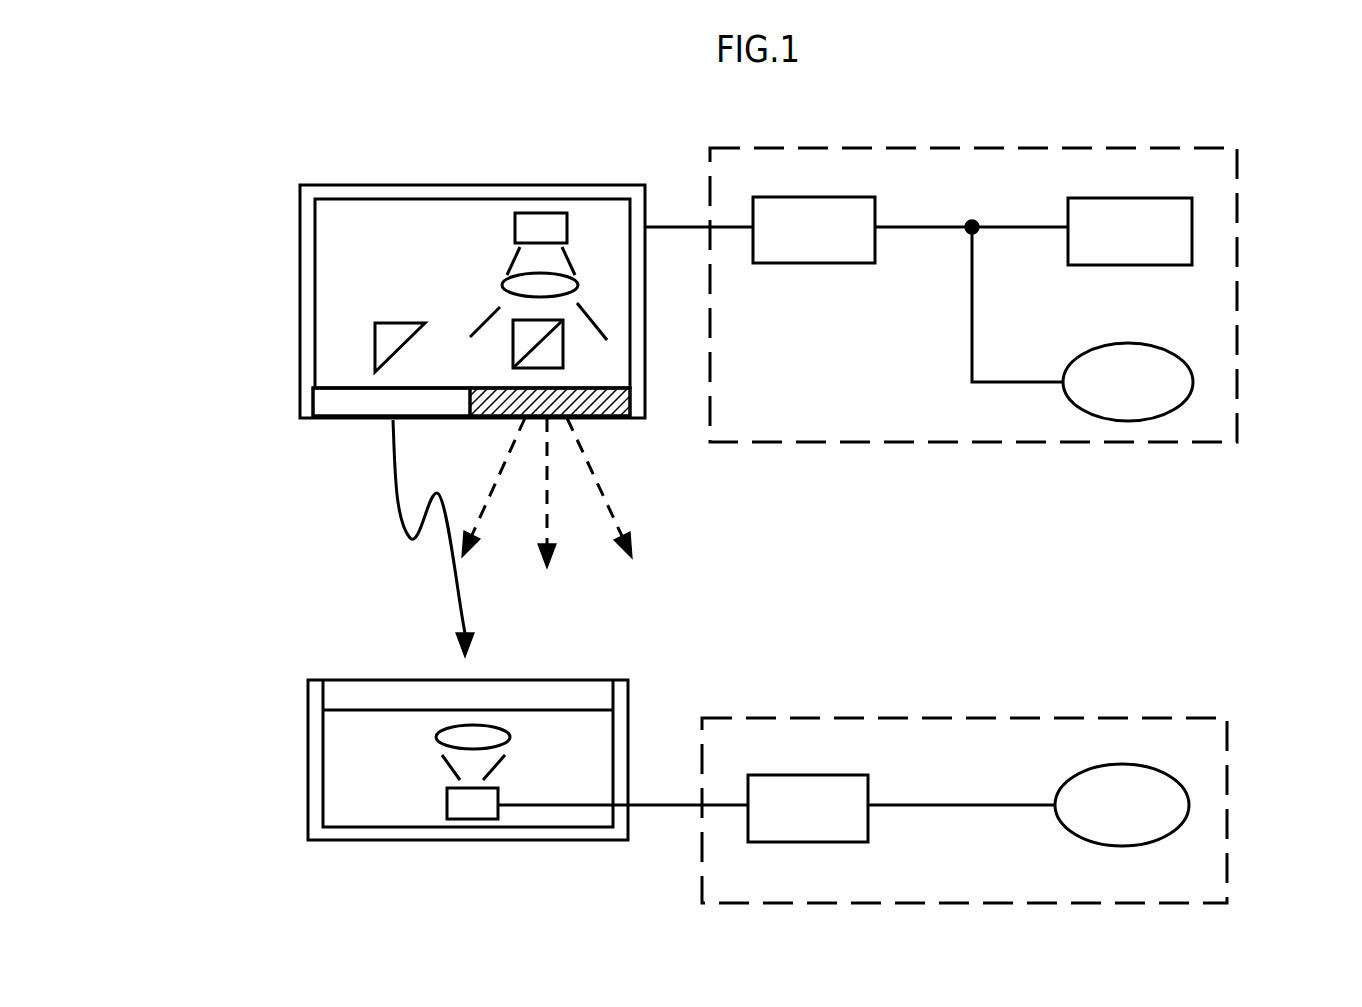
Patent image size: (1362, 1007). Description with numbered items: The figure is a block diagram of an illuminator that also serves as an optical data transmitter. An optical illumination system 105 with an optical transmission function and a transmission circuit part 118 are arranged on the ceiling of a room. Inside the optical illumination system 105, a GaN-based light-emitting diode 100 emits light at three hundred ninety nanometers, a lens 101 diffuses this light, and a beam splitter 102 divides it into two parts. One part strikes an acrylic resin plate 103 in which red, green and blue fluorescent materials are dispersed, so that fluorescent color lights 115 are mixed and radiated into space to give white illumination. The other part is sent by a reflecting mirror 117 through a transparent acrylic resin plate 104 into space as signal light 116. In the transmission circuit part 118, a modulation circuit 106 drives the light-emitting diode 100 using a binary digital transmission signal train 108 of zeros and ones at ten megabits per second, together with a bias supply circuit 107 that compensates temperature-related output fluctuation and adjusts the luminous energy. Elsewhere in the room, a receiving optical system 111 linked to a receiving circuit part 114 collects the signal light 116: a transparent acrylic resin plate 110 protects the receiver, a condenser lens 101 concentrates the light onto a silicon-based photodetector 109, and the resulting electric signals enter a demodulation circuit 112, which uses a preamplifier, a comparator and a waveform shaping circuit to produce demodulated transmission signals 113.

The GaN-based light-emitting diode 100 is at (384, 244).
The lens 101 is at (385, 511).
The beam splitter 102 is at (400, 348).
The acrylic resin plate 103 is at (421, 433).
The transparent acrylic resin plate 104 is at (331, 412).
The optical illumination system 105 is at (275, 158).
The modulation circuit 106 is at (760, 230).
The bias supply circuit 107 is at (1033, 231).
The binary digital transmission signal train 108 is at (1082, 324).
The silicon-based photodetector 109 is at (349, 777).
The transparent acrylic resin plate 110 is at (403, 659).
The receiving optical system 111 is at (265, 875).
The demodulation circuit 112 is at (683, 808).
The demodulated transmission signals 113 is at (1028, 805).
The receiving circuit part 114 is at (1330, 703).
The fluorescent color lights 115 is at (412, 493).
The signal light 116 is at (333, 538).
The reflecting mirror 117 is at (309, 342).
The transmission circuit part 118 is at (1330, 547).